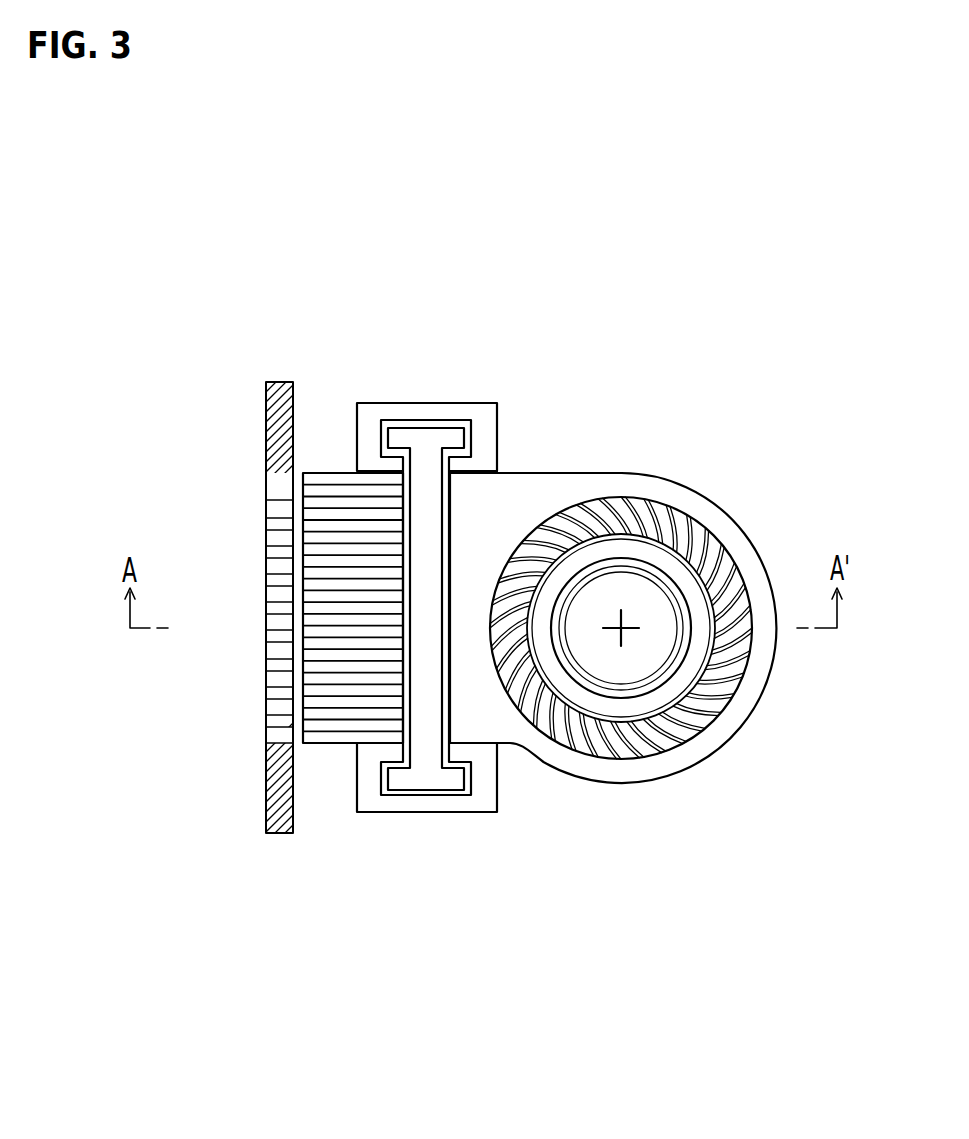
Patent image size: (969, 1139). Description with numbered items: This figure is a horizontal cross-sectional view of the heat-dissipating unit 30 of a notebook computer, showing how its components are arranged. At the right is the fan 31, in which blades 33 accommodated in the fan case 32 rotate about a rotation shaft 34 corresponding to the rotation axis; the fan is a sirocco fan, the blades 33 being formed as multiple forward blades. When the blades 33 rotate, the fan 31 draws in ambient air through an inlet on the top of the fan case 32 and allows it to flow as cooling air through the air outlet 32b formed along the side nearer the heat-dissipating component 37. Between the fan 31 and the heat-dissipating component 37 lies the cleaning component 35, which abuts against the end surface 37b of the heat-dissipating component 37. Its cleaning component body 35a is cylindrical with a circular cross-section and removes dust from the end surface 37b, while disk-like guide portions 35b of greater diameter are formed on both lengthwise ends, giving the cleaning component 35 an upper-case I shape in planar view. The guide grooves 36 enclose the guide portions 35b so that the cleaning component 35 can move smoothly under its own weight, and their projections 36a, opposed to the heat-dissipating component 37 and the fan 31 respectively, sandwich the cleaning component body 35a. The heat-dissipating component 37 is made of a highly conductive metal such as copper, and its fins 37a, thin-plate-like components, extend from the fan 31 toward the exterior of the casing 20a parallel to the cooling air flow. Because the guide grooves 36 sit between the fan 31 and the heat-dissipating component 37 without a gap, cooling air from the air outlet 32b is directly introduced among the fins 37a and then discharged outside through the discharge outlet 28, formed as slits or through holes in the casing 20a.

The casing 20a is at (266, 437).
The discharge outlet 28 is at (237, 475).
The heat-dissipating unit 30 is at (598, 340).
The fan 31 is at (614, 466).
The fan case 32 is at (692, 503).
The air outlet 32b is at (432, 590).
The blades 33 is at (686, 578).
The rotation shaft 34 is at (619, 629).
The cleaning component 35 is at (404, 688).
The cleaning component body 35a is at (432, 649).
The guide portions 35b is at (418, 777).
The guide grooves 36 is at (380, 412).
The projections 36a is at (457, 460).
The heat-dissipating component 37 is at (330, 472).
The fins 37a is at (328, 715).
The end surface 37b is at (403, 525).